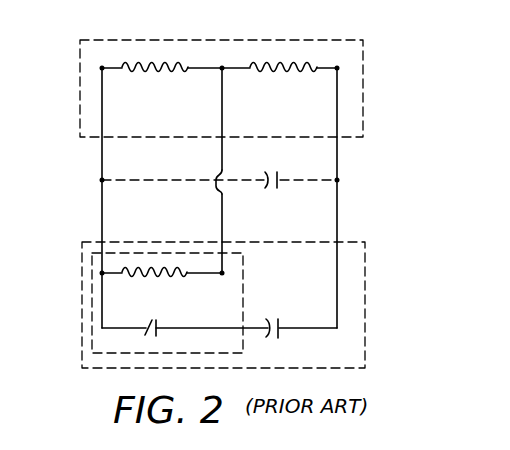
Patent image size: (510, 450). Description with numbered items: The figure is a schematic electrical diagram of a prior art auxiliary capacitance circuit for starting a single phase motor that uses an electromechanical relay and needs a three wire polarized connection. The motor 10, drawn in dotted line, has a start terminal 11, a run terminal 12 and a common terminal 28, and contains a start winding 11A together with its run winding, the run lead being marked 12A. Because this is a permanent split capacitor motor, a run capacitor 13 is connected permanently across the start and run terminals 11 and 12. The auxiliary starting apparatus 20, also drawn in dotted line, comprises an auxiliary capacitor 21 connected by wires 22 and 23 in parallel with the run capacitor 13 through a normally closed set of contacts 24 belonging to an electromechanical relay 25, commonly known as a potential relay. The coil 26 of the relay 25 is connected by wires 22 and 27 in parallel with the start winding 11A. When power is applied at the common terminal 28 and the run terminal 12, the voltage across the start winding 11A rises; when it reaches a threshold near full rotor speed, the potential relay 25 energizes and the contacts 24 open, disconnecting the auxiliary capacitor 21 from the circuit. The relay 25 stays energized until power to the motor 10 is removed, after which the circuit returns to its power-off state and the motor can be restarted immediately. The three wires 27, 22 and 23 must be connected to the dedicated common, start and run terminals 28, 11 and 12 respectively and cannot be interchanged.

The motor 10 is at (74, 64).
The start terminal 11 is at (105, 65).
The start winding 11A is at (165, 66).
The run terminal 12 is at (338, 66).
The run winding lead 12A is at (278, 66).
The run capacitor 13 is at (281, 176).
The auxiliary starting apparatus 20 is at (80, 316).
The auxiliary capacitor 21 is at (282, 324).
The wire 22 is at (102, 200).
The wire 23 is at (339, 194).
The normally closed set of contacts 24 is at (158, 326).
The electromechanical relay 25 is at (244, 256).
The coil 26 is at (156, 276).
The wire 27 is at (223, 200).
The common terminal 28 is at (224, 64).